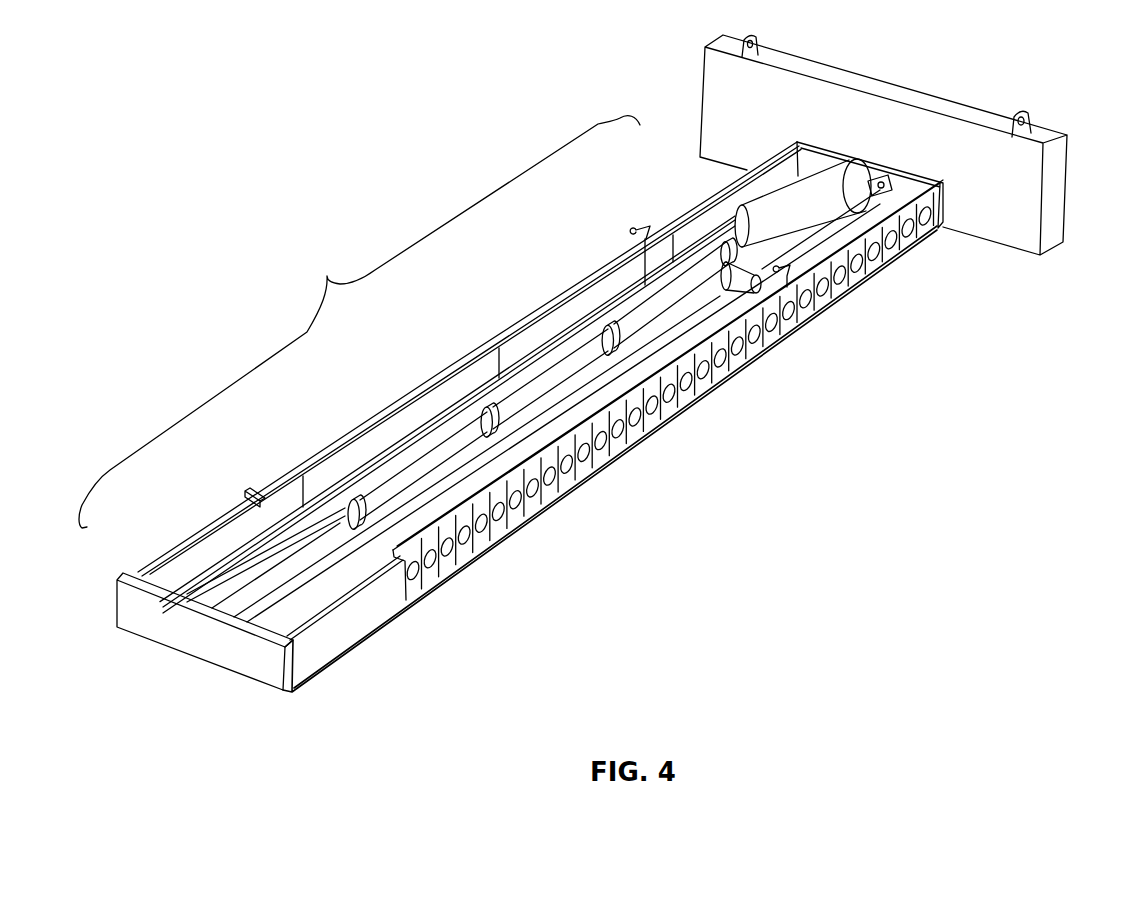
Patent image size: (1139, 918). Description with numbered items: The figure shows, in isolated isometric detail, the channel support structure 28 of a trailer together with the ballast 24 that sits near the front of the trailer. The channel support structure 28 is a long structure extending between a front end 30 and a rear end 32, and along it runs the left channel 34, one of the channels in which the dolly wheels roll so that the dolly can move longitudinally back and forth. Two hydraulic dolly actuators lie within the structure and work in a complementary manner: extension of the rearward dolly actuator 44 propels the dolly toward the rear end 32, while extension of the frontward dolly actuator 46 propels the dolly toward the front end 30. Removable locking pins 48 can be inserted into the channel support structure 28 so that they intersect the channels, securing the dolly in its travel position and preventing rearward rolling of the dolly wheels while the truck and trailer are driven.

The ballast 24 is at (1053, 208).
The channel support structure 28 is at (359, 322).
The front end of the channel support structure 30 is at (857, 178).
The rear end of the channel support structure 32 is at (197, 647).
The left channel 34 is at (363, 447).
The rearward dolly actuator 44 is at (843, 213).
The frontward dolly actuator 46 is at (573, 365).
The locking pins 48 is at (638, 228).